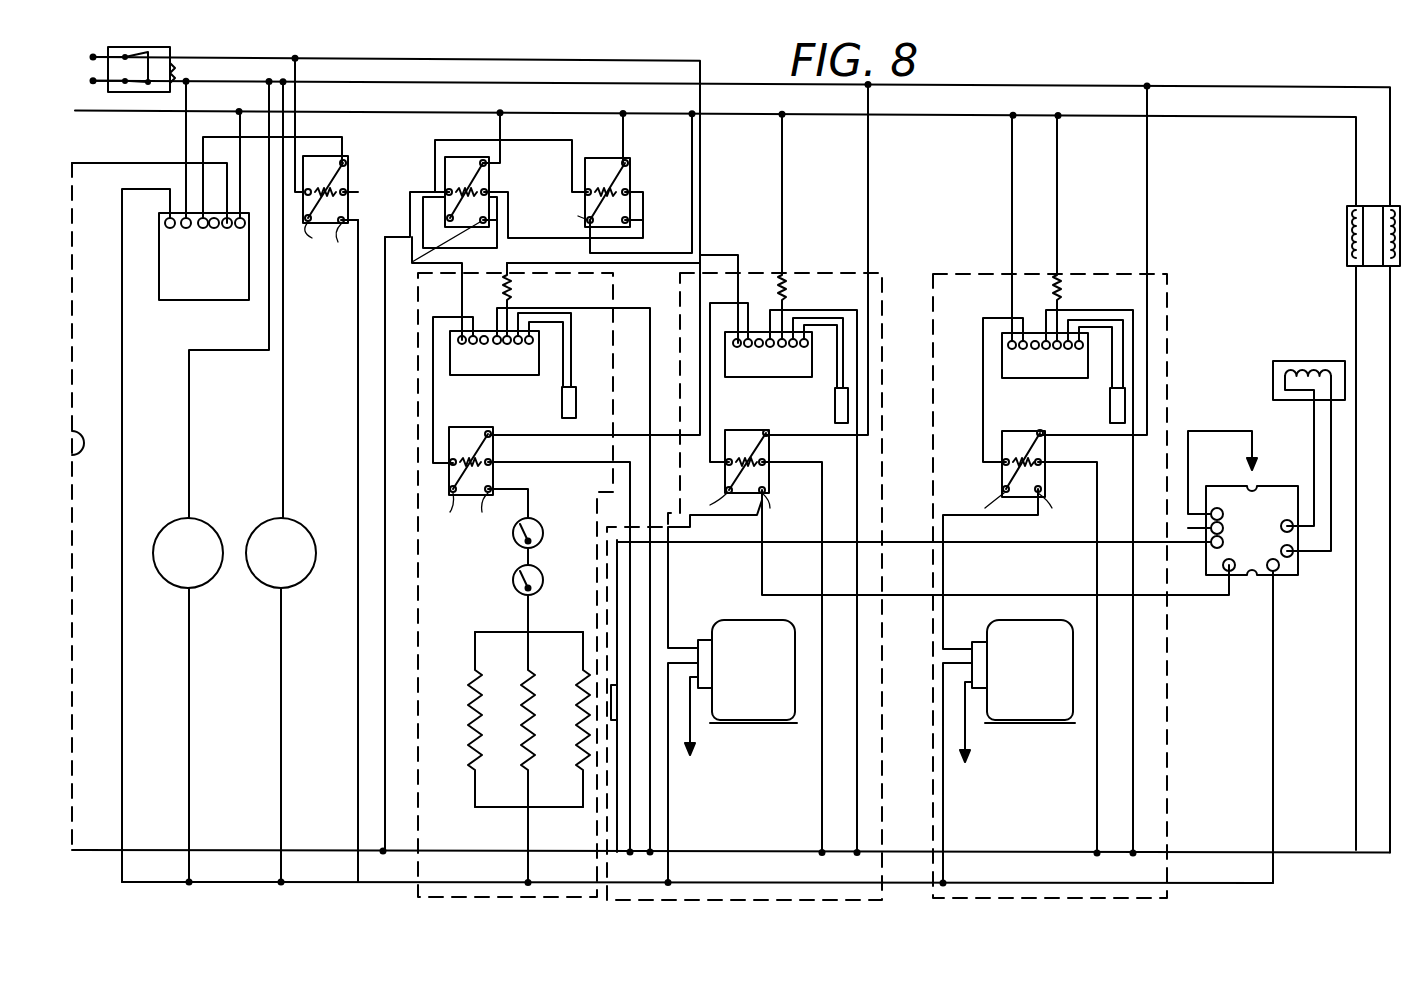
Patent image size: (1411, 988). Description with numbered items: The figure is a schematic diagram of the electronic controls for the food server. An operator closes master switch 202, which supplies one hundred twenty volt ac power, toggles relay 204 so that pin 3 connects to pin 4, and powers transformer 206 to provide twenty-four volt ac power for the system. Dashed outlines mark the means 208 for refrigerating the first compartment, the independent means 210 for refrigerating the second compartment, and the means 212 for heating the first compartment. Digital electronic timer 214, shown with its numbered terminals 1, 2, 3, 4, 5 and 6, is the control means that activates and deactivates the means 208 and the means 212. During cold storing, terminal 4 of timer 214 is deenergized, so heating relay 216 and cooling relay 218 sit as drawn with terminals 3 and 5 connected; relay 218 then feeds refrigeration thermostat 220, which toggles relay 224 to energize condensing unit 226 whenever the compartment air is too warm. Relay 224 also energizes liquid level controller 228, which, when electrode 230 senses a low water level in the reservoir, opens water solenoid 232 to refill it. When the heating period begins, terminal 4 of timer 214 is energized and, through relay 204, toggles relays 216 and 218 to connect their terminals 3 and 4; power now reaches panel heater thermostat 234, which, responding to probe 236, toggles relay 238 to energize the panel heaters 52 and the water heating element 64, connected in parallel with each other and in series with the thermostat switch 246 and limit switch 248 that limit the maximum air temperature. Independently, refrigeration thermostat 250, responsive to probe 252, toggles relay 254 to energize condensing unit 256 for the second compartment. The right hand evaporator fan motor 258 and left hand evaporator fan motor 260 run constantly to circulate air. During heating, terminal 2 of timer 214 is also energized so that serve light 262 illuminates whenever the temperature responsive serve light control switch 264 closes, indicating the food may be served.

The master switch 202 is at (112, 93).
The relay 204 is at (370, 148).
The transformer 206 is at (1345, 222).
The means for refrigerating the first compartment 208 is at (882, 800).
The means for refrigerating the second compartment 210 is at (1167, 898).
The means for heating the first compartment 212 is at (418, 897).
The digital electronic timer 214 is at (232, 481).
The heating relay 216 is at (455, 157).
The cooling relay 218 is at (610, 158).
The refrigeration thermostat 220 is at (740, 377).
The relay 224 is at (948, 641).
The condensing unit 226 is at (730, 723).
The liquid level controller 228 is at (1280, 578).
The electrode 230 is at (618, 700).
The water solenoid 232 is at (1318, 332).
The panel heater thermostat 234 is at (475, 376).
The probe 236 is at (561, 400).
The relay 238 is at (493, 450).
The thermostat switch 246 is at (513, 533).
The limit switch 248 is at (513, 580).
The refrigeration thermostat 250 is at (1060, 378).
The probe 252 is at (1110, 405).
The relay 254 is at (1045, 450).
The condensing unit 256 is at (1005, 723).
The right hand evaporator fan motor 258 is at (300, 590).
The left hand evaporator fan motor 260 is at (200, 520).
The serve light 262 is at (164, 735).
The serve light control switch 264 is at (85, 440).
The panel heaters 52 is at (518, 815).
The water heating element 64 is at (583, 770).
The terminal 1 is at (240, 230).
The terminal 2 is at (227, 230).
The terminal 3 is at (214, 230).
The terminal 4 is at (203, 230).
The terminal 5 is at (184, 230).
The terminal 6 is at (165, 228).